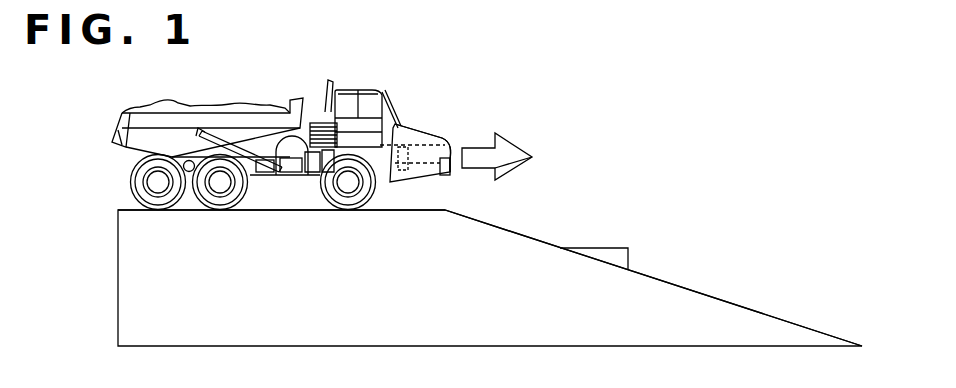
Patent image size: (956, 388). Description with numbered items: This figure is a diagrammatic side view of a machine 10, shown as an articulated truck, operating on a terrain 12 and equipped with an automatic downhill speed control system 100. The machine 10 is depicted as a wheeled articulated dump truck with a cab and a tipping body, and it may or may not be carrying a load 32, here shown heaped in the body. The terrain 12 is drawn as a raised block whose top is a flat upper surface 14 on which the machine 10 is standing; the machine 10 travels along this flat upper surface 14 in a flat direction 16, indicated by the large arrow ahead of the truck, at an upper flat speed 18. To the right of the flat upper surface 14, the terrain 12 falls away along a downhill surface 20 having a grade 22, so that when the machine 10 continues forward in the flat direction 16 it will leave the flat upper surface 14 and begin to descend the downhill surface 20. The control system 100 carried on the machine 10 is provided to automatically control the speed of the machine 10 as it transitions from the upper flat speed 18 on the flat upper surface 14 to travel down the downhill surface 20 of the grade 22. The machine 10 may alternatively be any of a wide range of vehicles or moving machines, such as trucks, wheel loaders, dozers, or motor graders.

The machine 10 is at (268, 142).
The terrain 12 is at (110, 276).
The flat upper surface 14 is at (118, 208).
The flat direction 16 is at (509, 142).
The upper flat speed 18 is at (505, 172).
The downhill surface 20 is at (730, 303).
The grade 22 is at (628, 253).
The load 32 is at (175, 104).
The automatic downhill speed control system 100 is at (422, 143).